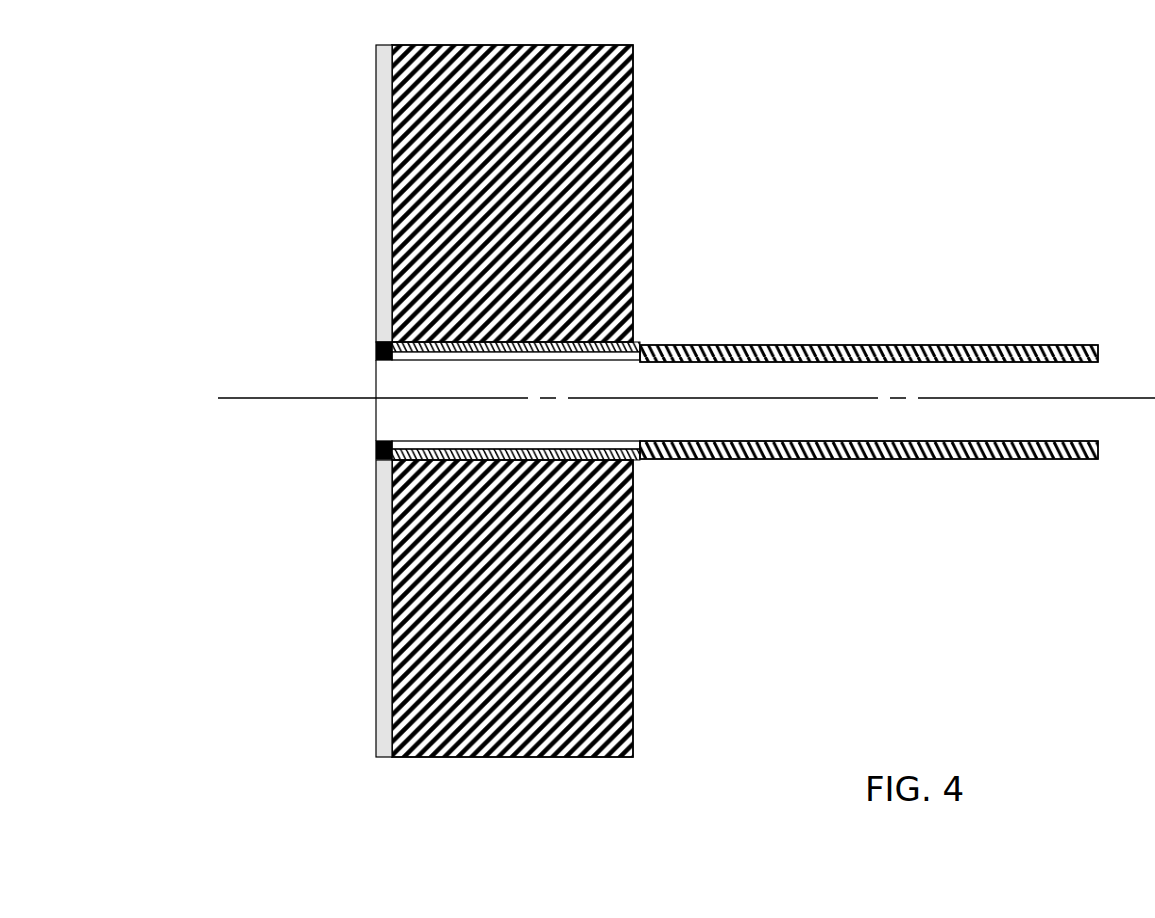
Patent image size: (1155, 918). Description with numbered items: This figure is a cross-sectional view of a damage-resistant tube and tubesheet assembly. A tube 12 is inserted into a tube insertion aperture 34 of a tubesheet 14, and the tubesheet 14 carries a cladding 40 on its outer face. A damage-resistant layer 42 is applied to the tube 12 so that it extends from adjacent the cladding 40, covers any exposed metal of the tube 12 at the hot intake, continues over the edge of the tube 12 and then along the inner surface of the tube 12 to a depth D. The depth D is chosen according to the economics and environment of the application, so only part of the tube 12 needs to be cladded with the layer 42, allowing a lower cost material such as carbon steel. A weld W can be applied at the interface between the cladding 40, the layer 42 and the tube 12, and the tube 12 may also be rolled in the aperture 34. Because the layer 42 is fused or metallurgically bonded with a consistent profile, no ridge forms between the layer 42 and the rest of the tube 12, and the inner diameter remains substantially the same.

The tube 12 is at (790, 343).
The tubesheet 14 is at (633, 140).
The tube insertion aperture 34 is at (376, 387).
The cladding 40 is at (376, 227).
The damage-resistant layer 42 is at (376, 301).
The weld W is at (376, 357).
The depth D is at (646, 330).